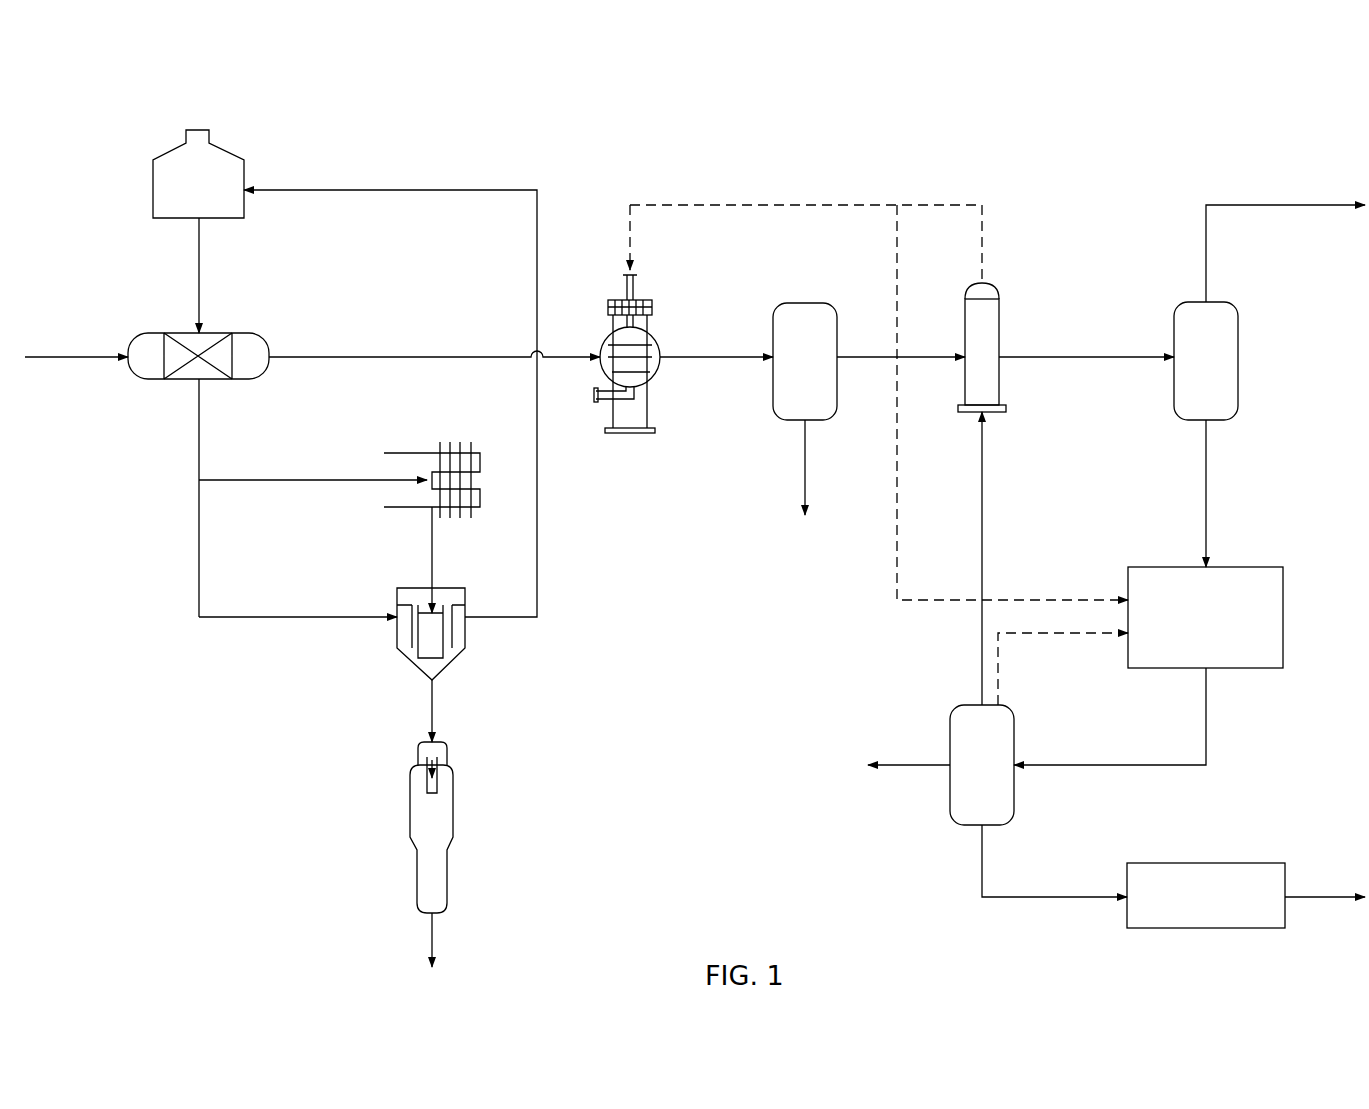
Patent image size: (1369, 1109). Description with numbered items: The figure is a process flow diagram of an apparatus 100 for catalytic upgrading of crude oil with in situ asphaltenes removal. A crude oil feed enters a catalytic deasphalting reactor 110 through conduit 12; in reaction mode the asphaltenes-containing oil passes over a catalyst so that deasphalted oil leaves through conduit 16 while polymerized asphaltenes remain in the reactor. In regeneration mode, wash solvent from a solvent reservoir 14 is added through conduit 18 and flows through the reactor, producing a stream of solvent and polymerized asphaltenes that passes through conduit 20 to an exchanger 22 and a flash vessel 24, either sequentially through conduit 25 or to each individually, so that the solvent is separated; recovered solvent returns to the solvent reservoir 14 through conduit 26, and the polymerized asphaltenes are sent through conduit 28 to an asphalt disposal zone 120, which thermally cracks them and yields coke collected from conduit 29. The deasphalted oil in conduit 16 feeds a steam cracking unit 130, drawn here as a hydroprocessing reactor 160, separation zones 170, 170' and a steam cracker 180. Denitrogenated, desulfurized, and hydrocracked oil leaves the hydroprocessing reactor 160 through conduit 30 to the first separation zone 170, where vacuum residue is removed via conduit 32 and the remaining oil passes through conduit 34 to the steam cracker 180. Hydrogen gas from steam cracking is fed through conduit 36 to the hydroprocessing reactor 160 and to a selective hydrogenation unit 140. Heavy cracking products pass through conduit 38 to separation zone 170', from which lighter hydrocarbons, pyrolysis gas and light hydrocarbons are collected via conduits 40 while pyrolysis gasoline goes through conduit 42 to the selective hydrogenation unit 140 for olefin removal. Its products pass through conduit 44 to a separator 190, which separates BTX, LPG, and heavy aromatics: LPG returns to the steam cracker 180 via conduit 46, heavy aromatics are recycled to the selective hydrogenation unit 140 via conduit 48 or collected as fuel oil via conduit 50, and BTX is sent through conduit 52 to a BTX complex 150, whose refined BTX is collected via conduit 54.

The apparatus 100 is at (108, 150).
The conduit 12 is at (78, 357).
The solvent reservoir 14 is at (228, 150).
The conduit 16 is at (412, 357).
The conduit 18 is at (198, 278).
The conduit 20 is at (198, 440).
The exchanger 22 is at (420, 453).
The flash vessel 24 is at (418, 588).
The conduit 25 is at (432, 545).
The conduit 26 is at (537, 495).
The conduit 28 is at (432, 705).
The conduit 29 is at (432, 932).
The conduit 30 is at (715, 357).
The conduit 32 is at (805, 462).
The conduit 34 is at (885, 357).
The conduit 36 is at (808, 205).
The conduit 38 is at (1090, 357).
The conduits 40 is at (1294, 205).
The conduit 42 is at (1206, 492).
The conduit 44 is at (1206, 720).
The conduit 46 is at (982, 513).
The conduit 48 is at (1062, 633).
The conduit 50 is at (910, 765).
The conduit 52 is at (982, 862).
The conduit 54 is at (1330, 897).
The catalytic deasphalting reactor 110 is at (240, 333).
The asphalt disposal zone 120 is at (410, 838).
The steam cracking unit 130 is at (942, 183).
The selective hydrogenation unit 140 is at (1246, 567).
The BTX complex 150 is at (1206, 863).
The hydroprocessing reactor 160 is at (652, 308).
The first separation zone 170 is at (812, 334).
The separation zone 170' is at (1248, 361).
The steam cracker 180 is at (999, 330).
The separator 190 is at (1014, 736).